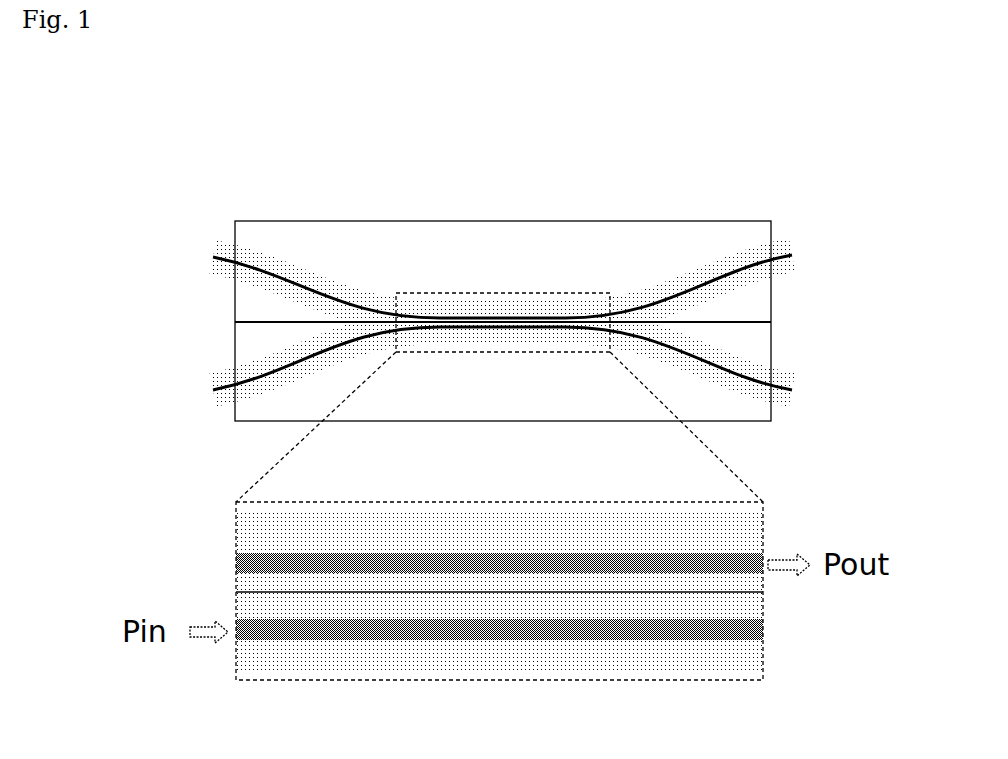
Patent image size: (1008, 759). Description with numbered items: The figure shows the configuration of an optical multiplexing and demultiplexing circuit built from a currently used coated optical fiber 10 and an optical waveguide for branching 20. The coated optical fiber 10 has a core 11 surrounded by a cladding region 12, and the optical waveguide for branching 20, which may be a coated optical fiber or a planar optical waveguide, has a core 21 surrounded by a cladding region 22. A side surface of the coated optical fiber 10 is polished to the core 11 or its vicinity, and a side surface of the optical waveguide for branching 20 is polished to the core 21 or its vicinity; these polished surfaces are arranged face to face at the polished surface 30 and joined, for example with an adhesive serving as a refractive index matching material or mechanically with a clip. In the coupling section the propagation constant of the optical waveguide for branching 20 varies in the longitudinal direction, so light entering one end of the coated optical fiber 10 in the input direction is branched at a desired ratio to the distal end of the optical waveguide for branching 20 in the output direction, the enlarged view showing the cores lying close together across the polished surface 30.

The currently used coated optical fiber 10 is at (492, 346).
The core of the currently used coated optical fiber 11 is at (790, 390).
The cladding region of the currently used coated optical fiber 12 is at (782, 360).
The optical waveguide for branching 20 is at (492, 235).
The core of the optical waveguide for branching 21 is at (790, 255).
The cladding region of the optical waveguide for branching 22 is at (782, 243).
The polished surface 30 is at (771, 322).